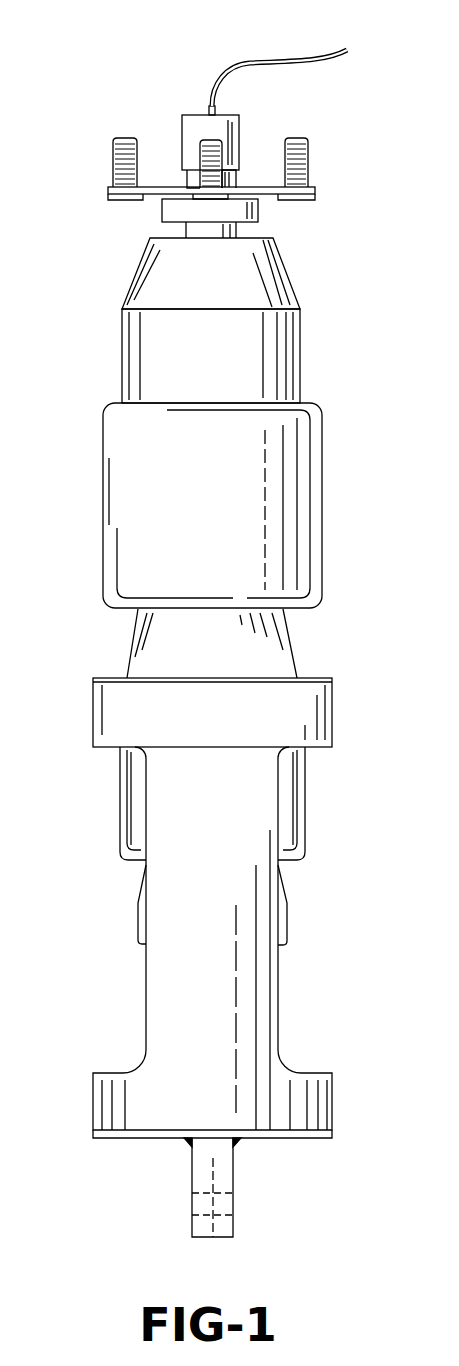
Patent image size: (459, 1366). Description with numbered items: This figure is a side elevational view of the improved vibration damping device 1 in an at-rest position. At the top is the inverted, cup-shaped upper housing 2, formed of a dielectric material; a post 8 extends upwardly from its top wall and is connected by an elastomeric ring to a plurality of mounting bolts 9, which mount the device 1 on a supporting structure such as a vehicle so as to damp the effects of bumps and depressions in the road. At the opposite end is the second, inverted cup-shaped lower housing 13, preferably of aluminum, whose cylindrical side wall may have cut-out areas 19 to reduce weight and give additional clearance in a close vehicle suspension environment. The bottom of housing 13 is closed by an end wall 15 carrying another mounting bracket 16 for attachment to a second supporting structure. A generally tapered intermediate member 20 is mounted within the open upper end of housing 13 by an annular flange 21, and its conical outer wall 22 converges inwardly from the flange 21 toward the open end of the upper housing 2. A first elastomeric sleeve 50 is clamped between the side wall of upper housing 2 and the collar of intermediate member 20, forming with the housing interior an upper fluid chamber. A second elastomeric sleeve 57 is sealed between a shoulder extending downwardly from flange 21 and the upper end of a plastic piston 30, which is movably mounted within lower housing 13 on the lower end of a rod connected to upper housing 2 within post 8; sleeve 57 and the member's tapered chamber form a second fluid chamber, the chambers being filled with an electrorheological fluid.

The vibration damping device 1 is at (336, 479).
The upper housing 2 is at (211, 106).
The post 8 is at (189, 130).
The mounting bolts 9 is at (303, 170).
The lower housing 13 is at (168, 994).
The end wall 15 is at (148, 1139).
The mounting bracket 16 is at (227, 1163).
The cut-out areas 19 is at (296, 1046).
The intermediate member 20 is at (250, 654).
The annular flange 21 is at (112, 678).
The conical outer wall 22 is at (162, 645).
The piston 30 is at (128, 919).
The first elastomeric sleeve 50 is at (116, 518).
The second elastomeric sleeve 57 is at (138, 783).